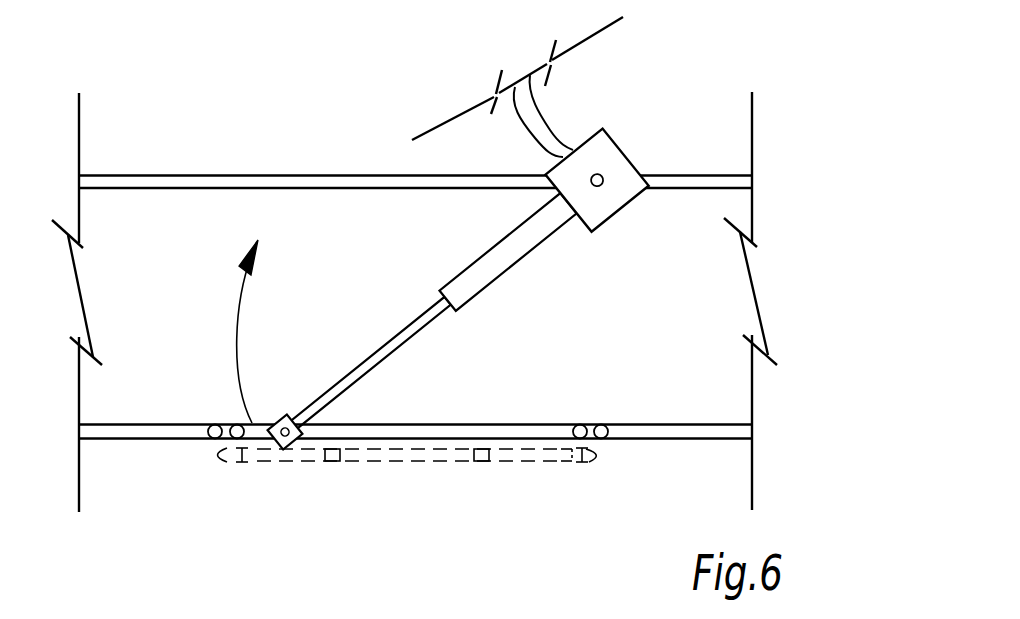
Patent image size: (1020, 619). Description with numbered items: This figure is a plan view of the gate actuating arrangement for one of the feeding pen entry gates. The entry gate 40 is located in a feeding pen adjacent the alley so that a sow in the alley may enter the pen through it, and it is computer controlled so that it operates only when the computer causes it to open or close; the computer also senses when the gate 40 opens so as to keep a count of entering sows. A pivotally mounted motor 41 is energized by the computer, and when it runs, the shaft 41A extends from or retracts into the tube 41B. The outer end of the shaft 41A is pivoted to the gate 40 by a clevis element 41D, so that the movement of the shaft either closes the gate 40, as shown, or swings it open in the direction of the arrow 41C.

The entry gate 40 is at (450, 424).
The motor 41 is at (627, 150).
The shaft 41A is at (425, 315).
The tube 41B is at (482, 263).
The arrow 41C is at (235, 328).
The clevis element 41D is at (292, 446).